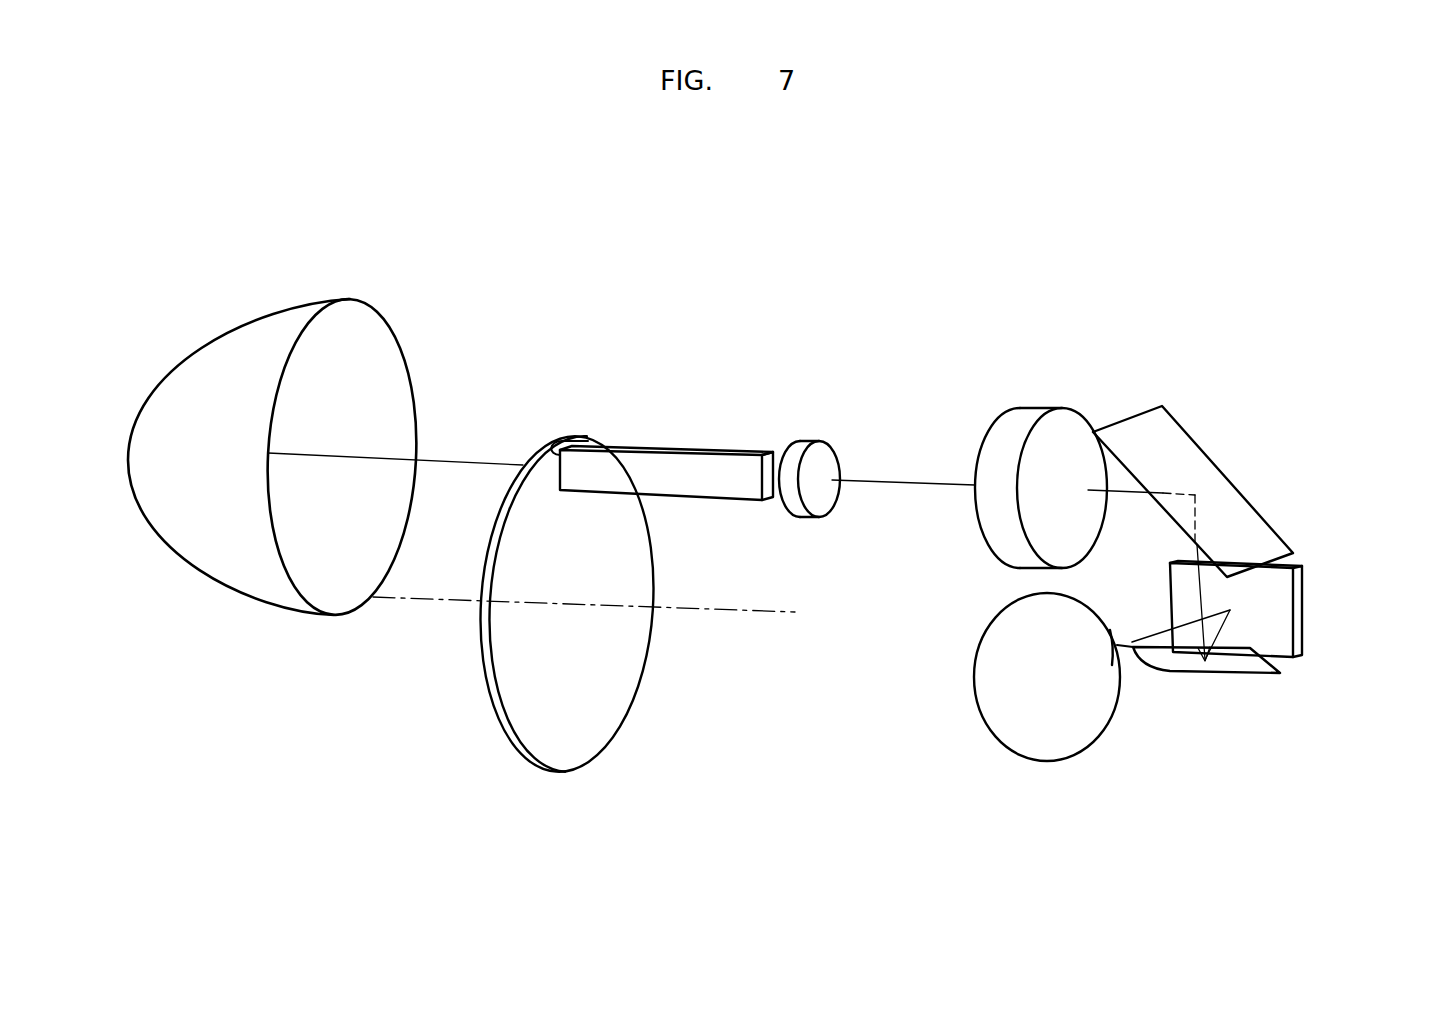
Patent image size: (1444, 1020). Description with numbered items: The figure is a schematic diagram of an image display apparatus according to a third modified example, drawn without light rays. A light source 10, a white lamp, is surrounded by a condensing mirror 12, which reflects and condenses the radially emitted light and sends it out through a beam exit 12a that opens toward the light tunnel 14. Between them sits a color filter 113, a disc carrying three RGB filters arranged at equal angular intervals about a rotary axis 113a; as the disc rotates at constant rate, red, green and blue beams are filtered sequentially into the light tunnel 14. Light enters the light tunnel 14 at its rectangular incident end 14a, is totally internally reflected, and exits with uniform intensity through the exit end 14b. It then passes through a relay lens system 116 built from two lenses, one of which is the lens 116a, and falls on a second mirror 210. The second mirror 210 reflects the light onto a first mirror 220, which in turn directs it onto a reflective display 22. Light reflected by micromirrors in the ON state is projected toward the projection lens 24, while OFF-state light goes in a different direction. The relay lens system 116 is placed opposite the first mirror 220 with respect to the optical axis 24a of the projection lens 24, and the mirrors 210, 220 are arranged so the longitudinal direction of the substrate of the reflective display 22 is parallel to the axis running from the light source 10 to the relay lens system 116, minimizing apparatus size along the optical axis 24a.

The light source 10 is at (110, 361).
The condensing mirror 12 is at (250, 580).
The beam exit 12a is at (358, 322).
The color filter 113 is at (559, 762).
The rotary axis 113a is at (665, 607).
The light tunnel 14 is at (652, 442).
The incident end 14a is at (552, 447).
The exit end 14b is at (773, 462).
The relay lens system 116 is at (1040, 303).
The lens 116a is at (807, 441).
The second mirror 210 is at (1198, 468).
The reflective display 22 is at (1283, 614).
The first mirror 220 is at (1218, 668).
The projection lens 24 is at (1058, 760).
The optical axis 24a is at (1126, 652).